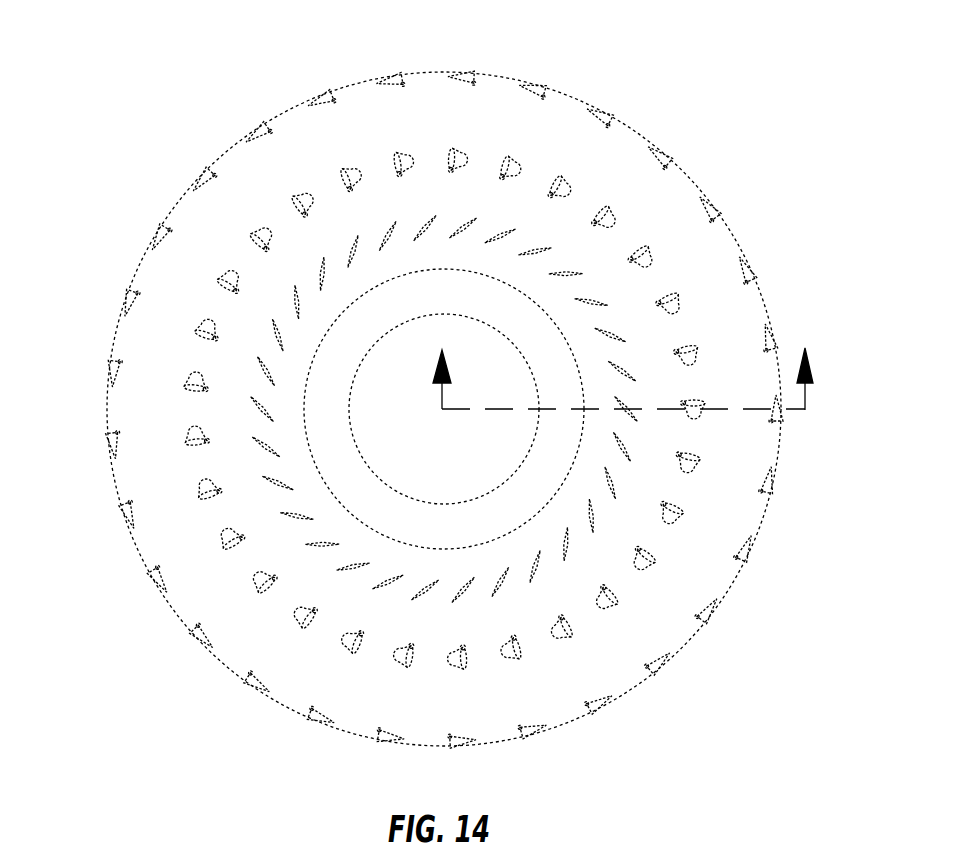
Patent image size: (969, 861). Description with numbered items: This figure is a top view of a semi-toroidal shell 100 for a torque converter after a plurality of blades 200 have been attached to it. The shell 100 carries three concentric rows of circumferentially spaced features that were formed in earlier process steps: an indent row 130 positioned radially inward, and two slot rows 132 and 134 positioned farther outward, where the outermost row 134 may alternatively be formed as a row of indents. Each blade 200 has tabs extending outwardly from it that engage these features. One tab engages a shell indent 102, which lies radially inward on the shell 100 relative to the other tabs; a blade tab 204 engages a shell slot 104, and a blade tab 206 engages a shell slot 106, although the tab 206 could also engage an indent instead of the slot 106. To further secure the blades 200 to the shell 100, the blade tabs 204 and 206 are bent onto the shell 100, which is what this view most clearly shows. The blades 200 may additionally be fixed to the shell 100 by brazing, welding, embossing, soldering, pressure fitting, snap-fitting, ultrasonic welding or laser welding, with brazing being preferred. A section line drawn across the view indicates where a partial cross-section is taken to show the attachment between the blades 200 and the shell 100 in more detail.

The shell 100 is at (210, 82).
The shell indent 102 is at (390, 228).
The shell slot 104 is at (465, 88).
The shell slot 106 is at (566, 182).
The indent row 130 is at (239, 456).
The slot row 132 is at (238, 672).
The slot row 134 is at (204, 550).
The blades 200 is at (706, 656).
The blade tab 204 is at (778, 412).
The blade tab 206 is at (690, 401).